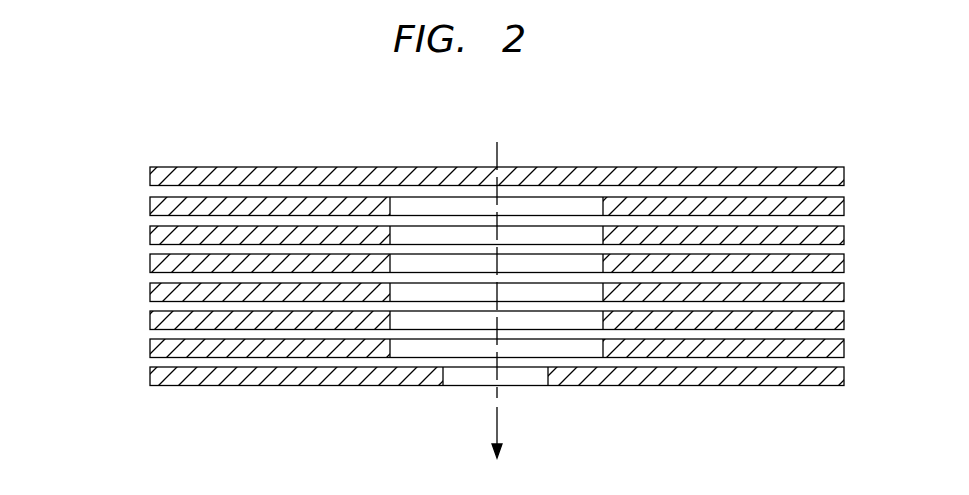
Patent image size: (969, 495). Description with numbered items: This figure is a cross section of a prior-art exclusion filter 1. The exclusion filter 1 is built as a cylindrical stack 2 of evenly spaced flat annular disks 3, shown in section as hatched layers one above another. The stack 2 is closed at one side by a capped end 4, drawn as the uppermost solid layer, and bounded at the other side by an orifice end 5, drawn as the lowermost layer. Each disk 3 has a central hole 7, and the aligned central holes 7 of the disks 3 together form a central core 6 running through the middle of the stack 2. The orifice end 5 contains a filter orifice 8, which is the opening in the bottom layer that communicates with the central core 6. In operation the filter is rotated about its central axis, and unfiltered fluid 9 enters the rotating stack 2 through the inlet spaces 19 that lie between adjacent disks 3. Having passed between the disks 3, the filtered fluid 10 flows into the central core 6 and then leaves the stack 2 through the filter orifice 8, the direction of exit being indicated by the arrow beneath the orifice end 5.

The exclusion filter 1 is at (475, 277).
The cylindrical stack 2 is at (147, 167).
The flat annular disk 3 is at (843, 348).
The capped end 4 is at (750, 167).
The orifice end 5 is at (743, 386).
The central core 6 is at (147, 188).
The central hole 7 is at (560, 233).
The filter orifice 8 is at (548, 389).
The unfiltered fluid 9 is at (827, 191).
The filtered fluid 10 is at (495, 448).
The inlet space 19 is at (843, 362).